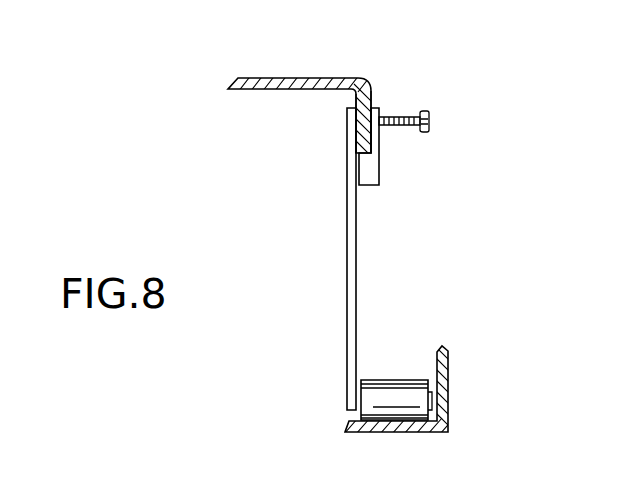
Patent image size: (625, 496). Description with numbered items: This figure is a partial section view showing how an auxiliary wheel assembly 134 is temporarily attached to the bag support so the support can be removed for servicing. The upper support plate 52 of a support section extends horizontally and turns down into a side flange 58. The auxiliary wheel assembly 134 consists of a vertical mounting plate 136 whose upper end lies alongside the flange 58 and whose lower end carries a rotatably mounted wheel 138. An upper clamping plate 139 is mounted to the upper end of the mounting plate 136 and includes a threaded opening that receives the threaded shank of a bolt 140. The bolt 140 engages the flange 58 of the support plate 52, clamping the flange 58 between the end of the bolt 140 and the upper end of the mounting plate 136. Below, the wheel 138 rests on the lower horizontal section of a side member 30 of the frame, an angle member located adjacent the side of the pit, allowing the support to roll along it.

The side member 30 is at (448, 385).
The upper support plate 52 is at (288, 77).
The downturned side flange 58 is at (373, 92).
The auxiliary wheel assembly 134 is at (435, 249).
The mounting plate 136 is at (358, 307).
The wheel 138 is at (411, 380).
The upper clamping plate 139 is at (380, 158).
The bolt 140 is at (432, 119).